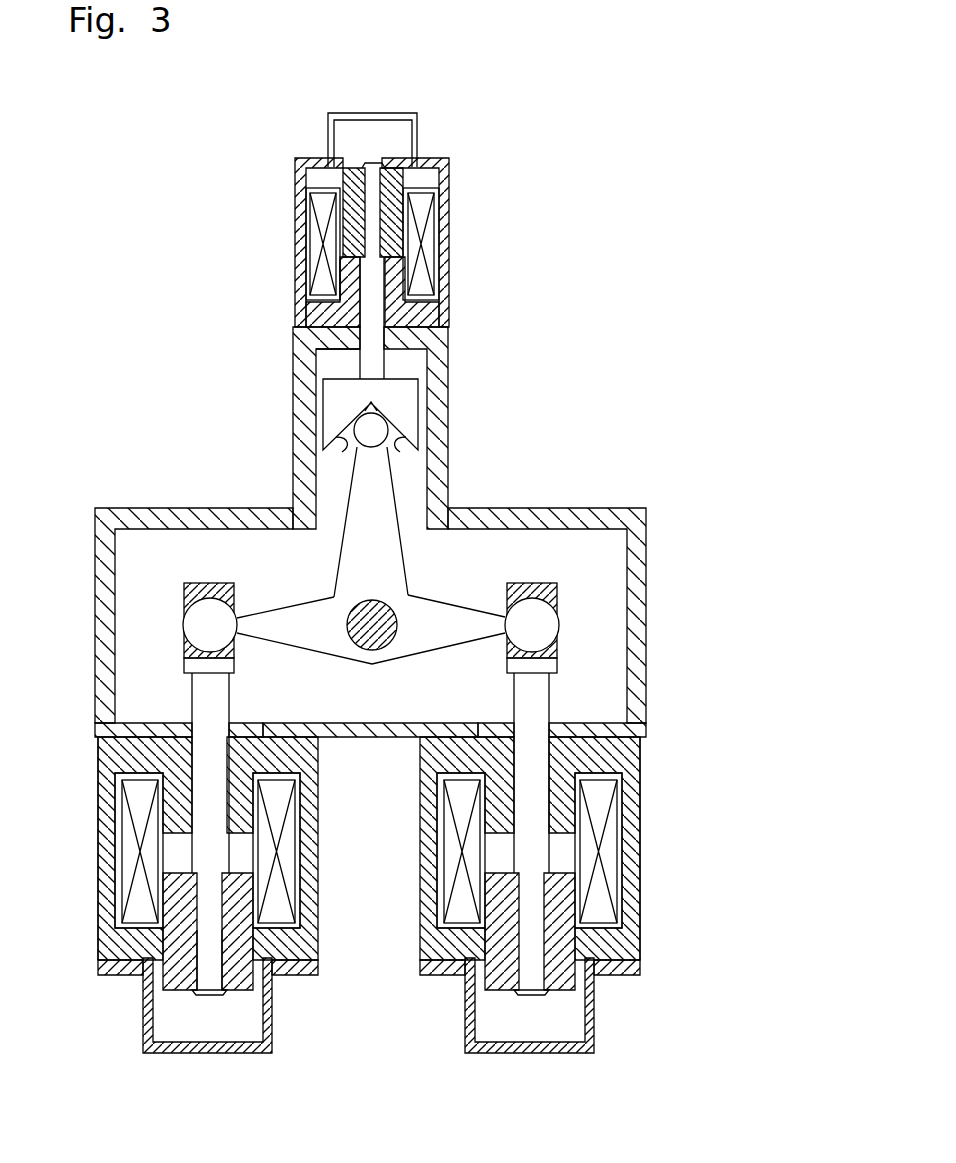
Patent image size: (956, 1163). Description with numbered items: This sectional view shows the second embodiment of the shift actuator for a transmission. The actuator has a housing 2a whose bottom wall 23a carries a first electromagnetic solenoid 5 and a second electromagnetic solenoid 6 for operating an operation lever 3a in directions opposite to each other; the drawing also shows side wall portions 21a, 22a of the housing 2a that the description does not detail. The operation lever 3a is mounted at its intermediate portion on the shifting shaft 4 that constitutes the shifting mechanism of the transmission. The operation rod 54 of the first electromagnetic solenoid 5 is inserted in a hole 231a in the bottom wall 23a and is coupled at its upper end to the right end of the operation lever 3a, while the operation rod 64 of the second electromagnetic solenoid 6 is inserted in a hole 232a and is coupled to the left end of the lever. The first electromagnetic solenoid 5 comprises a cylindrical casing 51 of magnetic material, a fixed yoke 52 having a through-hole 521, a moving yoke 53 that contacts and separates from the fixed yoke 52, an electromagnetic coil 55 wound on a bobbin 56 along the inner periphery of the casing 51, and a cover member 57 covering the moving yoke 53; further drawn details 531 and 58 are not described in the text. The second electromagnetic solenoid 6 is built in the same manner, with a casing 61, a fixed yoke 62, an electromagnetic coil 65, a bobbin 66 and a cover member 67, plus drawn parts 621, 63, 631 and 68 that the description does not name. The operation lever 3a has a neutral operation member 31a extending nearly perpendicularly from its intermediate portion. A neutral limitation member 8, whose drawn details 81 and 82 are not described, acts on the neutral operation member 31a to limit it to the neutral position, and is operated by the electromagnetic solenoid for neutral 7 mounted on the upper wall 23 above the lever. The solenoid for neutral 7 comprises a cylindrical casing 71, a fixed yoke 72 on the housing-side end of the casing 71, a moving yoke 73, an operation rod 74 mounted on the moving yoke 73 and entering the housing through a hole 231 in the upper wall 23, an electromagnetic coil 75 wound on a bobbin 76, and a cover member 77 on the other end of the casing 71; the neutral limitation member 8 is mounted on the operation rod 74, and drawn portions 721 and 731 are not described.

The electromagnetic solenoid for neutral 7 is at (258, 130).
The cylindrical casing 71 is at (295, 240).
The fixed yoke 72 is at (343, 315).
The core leg 721 is at (338, 275).
The moving yoke 73 is at (352, 203).
The plunger head 731 is at (343, 166).
The operation rod 74 is at (372, 180).
The electromagnetic coil 75 is at (422, 215).
The bobbin 76 is at (407, 243).
The cover member 77 is at (398, 113).
The housing 2a is at (578, 418).
The housing side wall 21a is at (637, 562).
The housing side wall 22a is at (105, 575).
The upper wall 23 is at (407, 350).
The hole 231 is at (355, 345).
The bottom wall 23a is at (353, 732).
The hole 231a is at (483, 733).
The hole 232a is at (250, 733).
The neutral limitation member 8 is at (338, 398).
The ball 81 is at (395, 452).
The spring hook 82 is at (340, 452).
The neutral operation member 31a is at (388, 490).
The operation lever 3a is at (447, 598).
The shifting shaft 4 is at (352, 603).
The operation rod 64 is at (198, 693).
The operation rod 54 is at (538, 697).
The second electromagnetic solenoid 6 is at (96, 1038).
The cylindrical casing 61 is at (107, 942).
The fixed yoke 62 is at (310, 760).
The yoke side wall 621 is at (113, 760).
The plunger rod end 63 is at (242, 975).
The plunger bore 631 is at (225, 948).
The electromagnetic coil 65 is at (133, 805).
The bobbin 66 is at (163, 893).
The cover member 67 is at (252, 1050).
The bobbin 68 is at (170, 853).
The first electromagnetic solenoid 5 is at (646, 1057).
The cylindrical casing 51 is at (637, 907).
The fixed yoke 52 is at (620, 760).
The through-hole 521 is at (580, 802).
The moving yoke 53 is at (627, 948).
The plunger rod end 531 is at (575, 977).
The electromagnetic coil 55 is at (453, 792).
The bobbin 56 is at (455, 820).
The cover member 57 is at (502, 1052).
The coil 58 is at (568, 850).